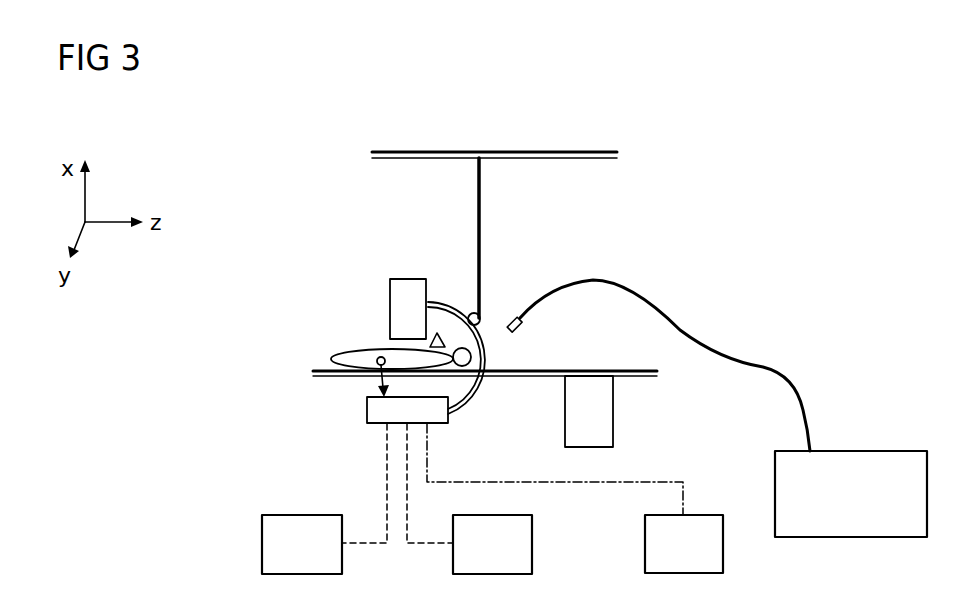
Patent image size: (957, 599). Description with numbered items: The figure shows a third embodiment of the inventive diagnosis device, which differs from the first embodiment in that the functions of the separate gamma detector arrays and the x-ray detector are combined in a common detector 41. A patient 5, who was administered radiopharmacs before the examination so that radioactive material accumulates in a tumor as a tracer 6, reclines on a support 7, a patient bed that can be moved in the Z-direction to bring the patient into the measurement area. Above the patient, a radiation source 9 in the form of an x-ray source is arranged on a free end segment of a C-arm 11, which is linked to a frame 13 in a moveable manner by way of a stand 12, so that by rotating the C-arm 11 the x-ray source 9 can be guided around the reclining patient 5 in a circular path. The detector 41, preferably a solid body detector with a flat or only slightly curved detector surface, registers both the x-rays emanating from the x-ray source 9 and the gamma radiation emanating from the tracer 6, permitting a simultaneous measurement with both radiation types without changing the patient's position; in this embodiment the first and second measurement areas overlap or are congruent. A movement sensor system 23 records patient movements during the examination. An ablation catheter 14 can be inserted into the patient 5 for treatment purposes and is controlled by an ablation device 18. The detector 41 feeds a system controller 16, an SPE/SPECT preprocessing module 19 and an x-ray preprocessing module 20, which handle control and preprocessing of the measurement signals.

The patient 5 is at (332, 358).
The tracer 6 is at (372, 362).
The support 7 is at (640, 377).
The radiation source 9 is at (408, 286).
The C-arm 11 is at (487, 361).
The stand 12 is at (478, 197).
The frame 13 is at (568, 158).
The ablation catheter 14 is at (510, 318).
The system controller 16 is at (698, 558).
The ablation device 18 is at (866, 508).
The SPE/SPECT preprocessing module 19 is at (507, 558).
The x-ray preprocessing module 20 is at (317, 558).
The movement sensor system 23 is at (434, 340).
The common detector 41 is at (367, 408).